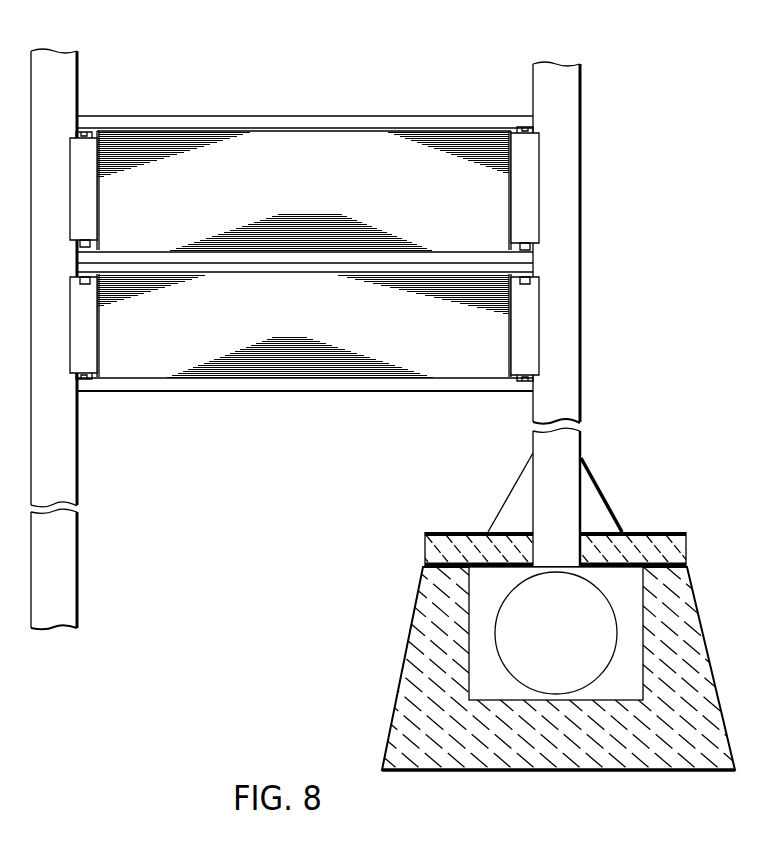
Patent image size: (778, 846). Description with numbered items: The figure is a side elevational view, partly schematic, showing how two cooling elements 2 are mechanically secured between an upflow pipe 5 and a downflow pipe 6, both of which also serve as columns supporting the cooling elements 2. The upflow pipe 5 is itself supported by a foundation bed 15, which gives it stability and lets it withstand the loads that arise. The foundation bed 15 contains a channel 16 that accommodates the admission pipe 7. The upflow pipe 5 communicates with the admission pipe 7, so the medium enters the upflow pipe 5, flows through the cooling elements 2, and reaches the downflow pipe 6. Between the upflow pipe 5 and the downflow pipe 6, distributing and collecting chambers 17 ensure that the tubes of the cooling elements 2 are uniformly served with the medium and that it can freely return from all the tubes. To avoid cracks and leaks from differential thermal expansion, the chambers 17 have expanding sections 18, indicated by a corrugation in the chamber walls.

The downflow pipe 6 is at (70, 72).
The upflow pipe 5 is at (573, 118).
The cooling element 2 is at (233, 137).
The distributing and collecting chamber 17 is at (88, 200).
The expanding section 18 is at (86, 132).
The channel 16 is at (626, 576).
The foundation bed 15 is at (403, 714).
The admission pipe 7 is at (503, 608).